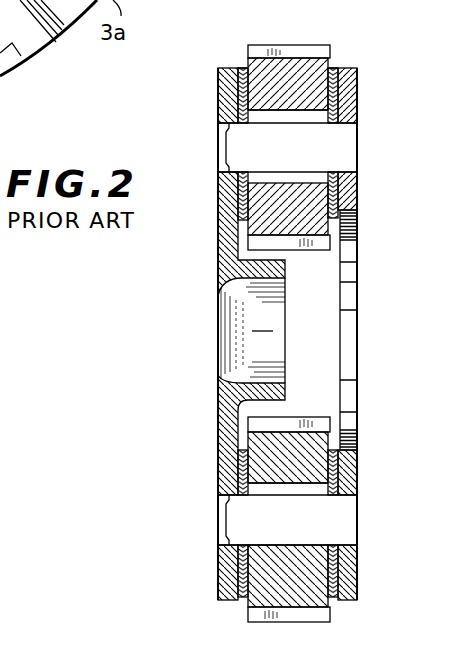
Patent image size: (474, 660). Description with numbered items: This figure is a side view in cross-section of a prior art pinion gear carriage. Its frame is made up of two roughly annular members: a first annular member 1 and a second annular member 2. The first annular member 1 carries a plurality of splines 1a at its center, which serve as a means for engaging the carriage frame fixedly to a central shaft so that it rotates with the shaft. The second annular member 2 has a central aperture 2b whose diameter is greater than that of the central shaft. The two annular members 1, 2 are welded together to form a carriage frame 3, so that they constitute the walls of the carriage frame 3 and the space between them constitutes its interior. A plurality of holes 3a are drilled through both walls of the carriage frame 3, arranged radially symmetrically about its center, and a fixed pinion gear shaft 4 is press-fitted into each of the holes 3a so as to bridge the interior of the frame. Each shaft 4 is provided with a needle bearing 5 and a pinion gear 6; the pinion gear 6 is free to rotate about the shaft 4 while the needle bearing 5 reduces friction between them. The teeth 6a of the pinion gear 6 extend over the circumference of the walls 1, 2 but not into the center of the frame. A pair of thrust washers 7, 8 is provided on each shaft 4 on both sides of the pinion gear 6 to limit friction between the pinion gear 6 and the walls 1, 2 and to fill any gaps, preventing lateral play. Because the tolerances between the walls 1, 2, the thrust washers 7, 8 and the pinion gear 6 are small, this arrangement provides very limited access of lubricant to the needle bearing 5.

The first annular member 1 is at (218, 462).
The splines 1a is at (272, 282).
The second annular member 2 is at (360, 478).
The central aperture 2b is at (345, 445).
The carriage frame 3 is at (212, 268).
The holes 3a is at (228, 110).
The fixed pinion gear shaft 4 is at (345, 148).
The needle bearing 5 is at (316, 179).
The pinion gear 6 is at (258, 200).
The teeth 6a is at (297, 47).
The thrust washer 7 is at (243, 67).
The thrust washer 8 is at (242, 67).